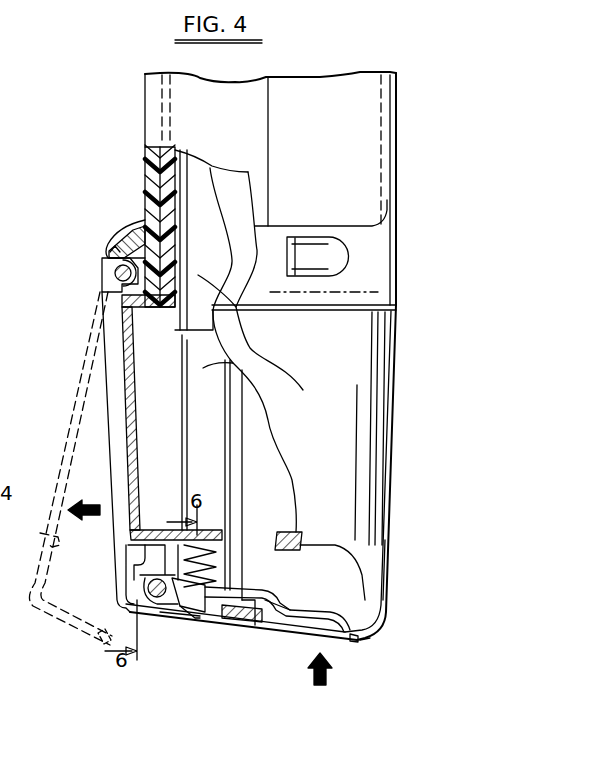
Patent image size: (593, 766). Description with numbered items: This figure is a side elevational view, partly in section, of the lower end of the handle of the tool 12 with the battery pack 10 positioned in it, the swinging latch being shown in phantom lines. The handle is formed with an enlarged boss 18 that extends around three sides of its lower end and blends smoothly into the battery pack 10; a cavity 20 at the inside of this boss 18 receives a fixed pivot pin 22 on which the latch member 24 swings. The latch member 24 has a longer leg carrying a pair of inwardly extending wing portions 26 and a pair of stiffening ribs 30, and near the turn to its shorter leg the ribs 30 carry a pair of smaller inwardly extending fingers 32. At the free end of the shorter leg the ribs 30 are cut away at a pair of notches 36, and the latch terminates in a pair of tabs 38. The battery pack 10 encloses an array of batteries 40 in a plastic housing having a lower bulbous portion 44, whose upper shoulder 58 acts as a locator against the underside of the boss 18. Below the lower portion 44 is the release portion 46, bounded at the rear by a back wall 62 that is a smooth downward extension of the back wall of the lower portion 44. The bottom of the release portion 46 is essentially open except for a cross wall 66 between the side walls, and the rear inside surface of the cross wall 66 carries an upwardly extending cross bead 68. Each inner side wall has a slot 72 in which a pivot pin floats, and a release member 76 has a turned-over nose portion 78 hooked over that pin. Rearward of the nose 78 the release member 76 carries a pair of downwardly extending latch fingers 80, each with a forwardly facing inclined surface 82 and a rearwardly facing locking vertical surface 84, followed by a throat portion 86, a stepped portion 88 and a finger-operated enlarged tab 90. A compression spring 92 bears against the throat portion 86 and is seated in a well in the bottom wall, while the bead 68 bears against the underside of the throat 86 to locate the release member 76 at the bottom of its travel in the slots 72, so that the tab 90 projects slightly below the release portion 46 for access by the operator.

The battery pack 10 is at (395, 480).
The tool 12 is at (143, 165).
The enlarged boss 18 is at (107, 225).
The cavity 20 is at (105, 262).
The fixed pivot pin 22 is at (116, 279).
The latch member 24 is at (108, 428).
The wing portions 26 is at (142, 228).
The stiffening ribs 30 is at (115, 385).
The fingers 32 is at (134, 565).
The notches 36 is at (182, 627).
The tabs 38 is at (215, 625).
The batteries 40 is at (243, 397).
The lower bulbous portion 44 is at (400, 362).
The release portion 46 is at (378, 640).
The upper shoulder 58 is at (121, 304).
The back wall 62 is at (386, 565).
The cross wall 66 is at (240, 625).
The cross bead 68 is at (275, 628).
The slot 72 is at (157, 543).
The release member 76 is at (265, 594).
The nose portion 78 is at (153, 618).
The latch fingers 80 is at (240, 530).
The inclined surface 82 is at (187, 620).
The locking vertical surface 84 is at (208, 622).
The throat portion 86 is at (245, 598).
The stepped portion 88 is at (290, 615).
The enlarged tab 90 is at (357, 642).
The compression spring 92 is at (214, 530).